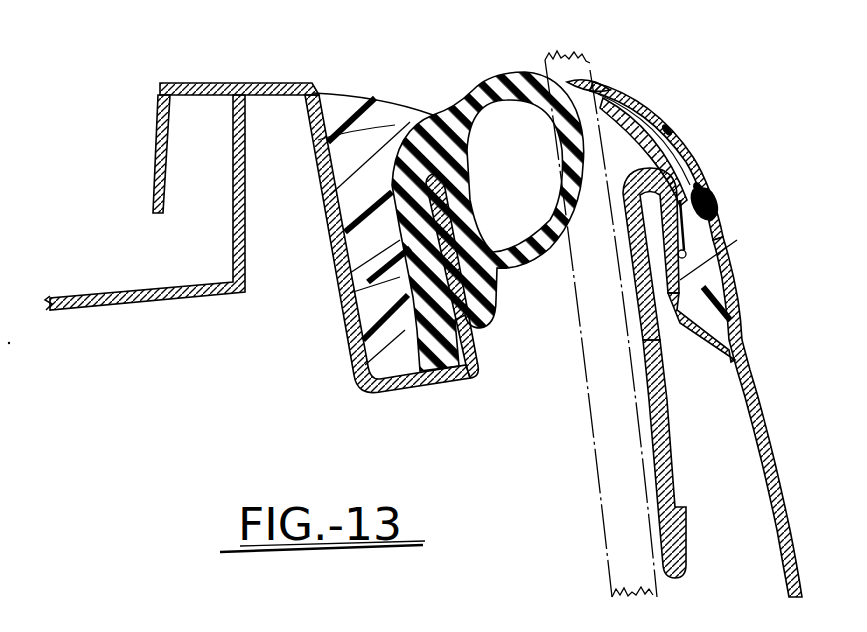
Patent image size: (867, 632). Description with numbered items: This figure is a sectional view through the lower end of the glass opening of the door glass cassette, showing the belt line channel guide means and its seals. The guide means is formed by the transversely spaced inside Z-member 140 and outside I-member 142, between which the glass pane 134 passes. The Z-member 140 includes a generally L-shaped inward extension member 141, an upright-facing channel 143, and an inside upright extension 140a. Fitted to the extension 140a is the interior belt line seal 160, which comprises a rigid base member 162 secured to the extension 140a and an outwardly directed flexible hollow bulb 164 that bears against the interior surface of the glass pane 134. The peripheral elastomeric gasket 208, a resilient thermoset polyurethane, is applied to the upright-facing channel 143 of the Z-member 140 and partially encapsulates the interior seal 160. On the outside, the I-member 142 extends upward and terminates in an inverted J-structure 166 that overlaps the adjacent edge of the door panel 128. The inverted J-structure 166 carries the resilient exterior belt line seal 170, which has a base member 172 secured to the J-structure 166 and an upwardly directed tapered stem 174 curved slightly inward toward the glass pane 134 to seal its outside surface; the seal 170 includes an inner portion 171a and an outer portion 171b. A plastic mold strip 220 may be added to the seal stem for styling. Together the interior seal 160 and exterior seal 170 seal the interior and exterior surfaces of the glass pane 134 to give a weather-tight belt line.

The door panel 128 is at (760, 402).
The glass pane 134 is at (620, 485).
The Z-member 140 is at (377, 390).
The inside upright extension 140a is at (476, 349).
The L-shaped inward extension member 141 is at (138, 306).
The I-member 142 is at (670, 466).
The upright-facing channel 143 is at (336, 88).
The interior belt line seal 160 is at (447, 102).
The rigid base member 162 is at (403, 290).
The flexible hollow bulb 164 is at (522, 74).
The inverted J-structure 166 is at (686, 255).
The exterior belt line seal 170 is at (693, 260).
The inner portion 171a is at (615, 85).
The outer portion 171b is at (640, 92).
The base member 172 is at (672, 148).
The tapered stem 174 is at (672, 114).
The gasket 208 is at (372, 95).
The mold strip 220 is at (712, 196).